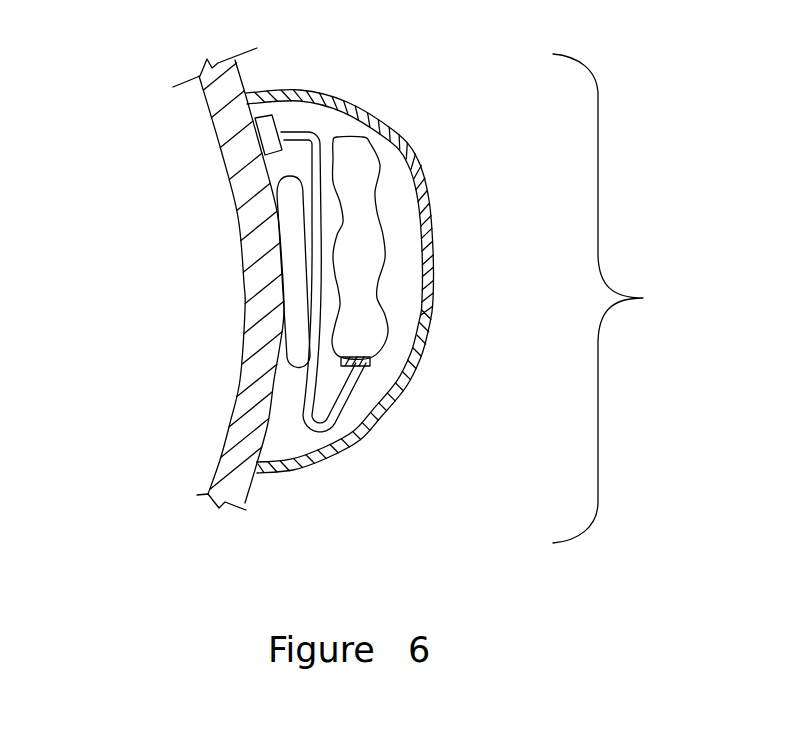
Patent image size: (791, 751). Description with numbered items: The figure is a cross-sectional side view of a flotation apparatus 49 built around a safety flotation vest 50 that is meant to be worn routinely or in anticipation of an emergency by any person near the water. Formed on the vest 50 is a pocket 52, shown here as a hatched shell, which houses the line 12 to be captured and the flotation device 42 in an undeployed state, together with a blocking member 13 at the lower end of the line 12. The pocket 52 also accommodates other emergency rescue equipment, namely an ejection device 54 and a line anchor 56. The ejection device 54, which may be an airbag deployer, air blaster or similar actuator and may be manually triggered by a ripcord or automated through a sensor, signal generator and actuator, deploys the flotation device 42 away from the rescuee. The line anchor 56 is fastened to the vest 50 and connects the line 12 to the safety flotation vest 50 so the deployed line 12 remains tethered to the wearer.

The safety flotation vest 50 is at (227, 113).
The pocket 52 is at (362, 477).
The line anchor 56 is at (270, 135).
The ejection device 54 is at (293, 273).
The line 12 is at (357, 378).
The blocking member 13 is at (371, 358).
The flotation device 42 is at (358, 188).
The flotation apparatus 49 is at (621, 298).